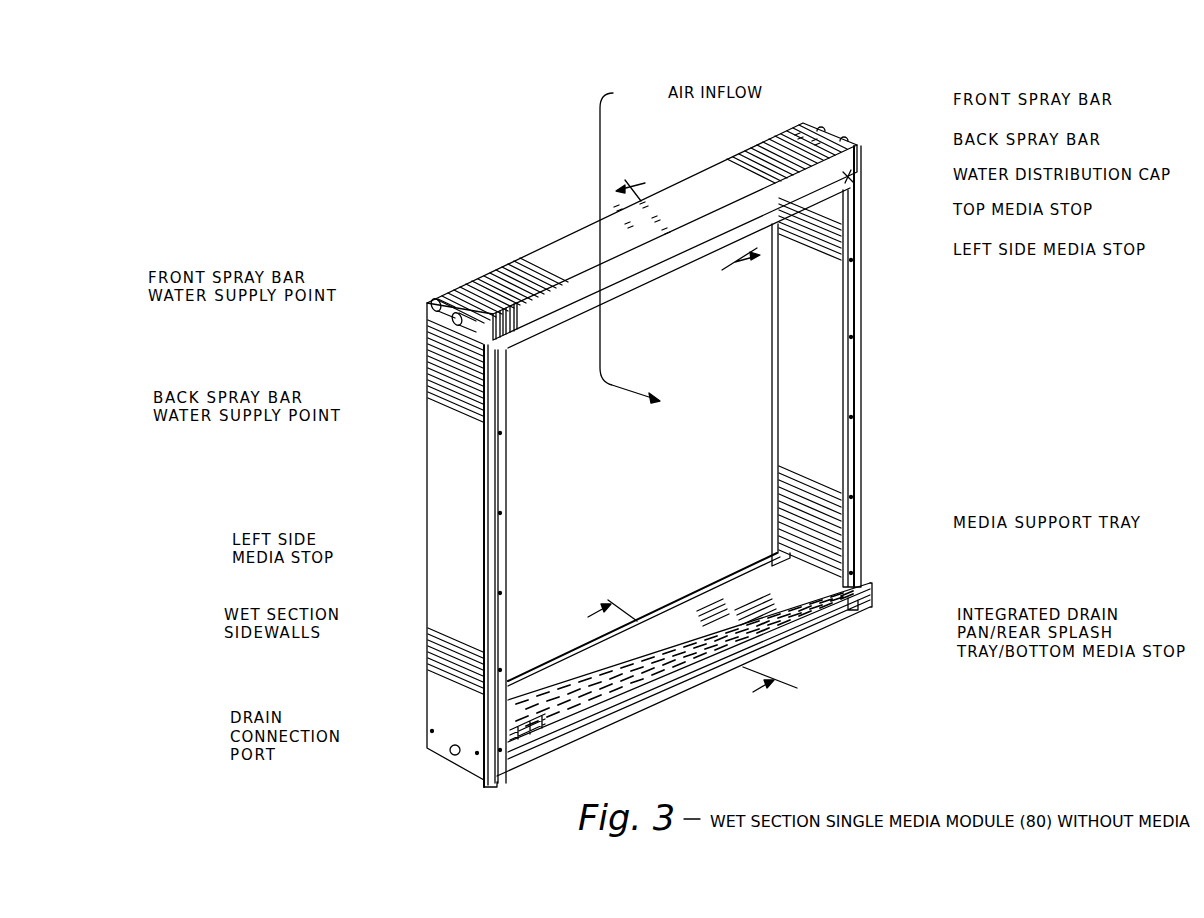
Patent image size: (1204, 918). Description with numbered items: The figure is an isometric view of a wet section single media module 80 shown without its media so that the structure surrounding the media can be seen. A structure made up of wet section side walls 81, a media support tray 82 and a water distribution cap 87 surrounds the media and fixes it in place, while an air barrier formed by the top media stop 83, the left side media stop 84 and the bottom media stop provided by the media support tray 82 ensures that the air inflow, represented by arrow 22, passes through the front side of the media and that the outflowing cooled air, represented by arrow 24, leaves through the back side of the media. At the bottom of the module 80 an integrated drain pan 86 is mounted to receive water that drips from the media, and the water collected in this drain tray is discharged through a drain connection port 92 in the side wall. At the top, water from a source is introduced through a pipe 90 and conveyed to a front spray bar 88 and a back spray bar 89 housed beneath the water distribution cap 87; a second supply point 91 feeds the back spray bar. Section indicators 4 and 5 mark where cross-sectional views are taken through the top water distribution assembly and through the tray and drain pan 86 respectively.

The section line 4- 4 is at (689, 218).
The section line 5- 5 is at (683, 654).
The arrow representing air inflow 22 is at (628, 240).
The arrow representing outflowing cooled air 24 is at (672, 401).
The single media module 80 is at (979, 397).
The wet section side walls 81 is at (441, 594).
The media support tray 82 is at (836, 577).
The top media stop 83 is at (851, 180).
The left side media stop 84 is at (503, 497).
The integrated drain pan 86 is at (862, 592).
The water distribution cap 87 is at (853, 148).
The front spray bar 88 is at (823, 130).
The back spray bar 89 is at (846, 141).
The pipe 90 is at (430, 303).
The back spray bar water supply point 91 is at (470, 323).
The drain connection port 92 is at (448, 745).